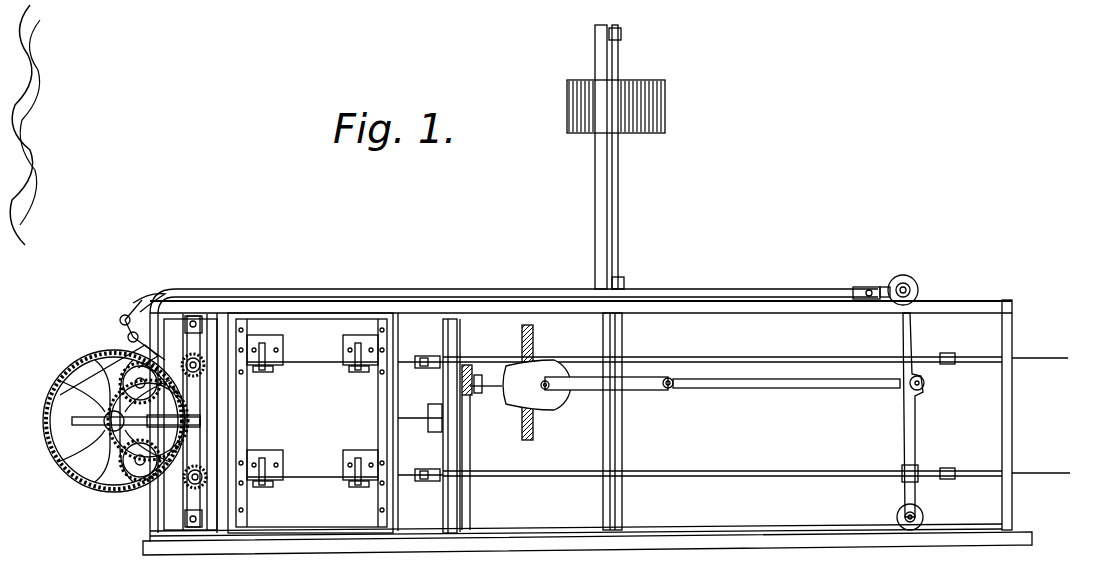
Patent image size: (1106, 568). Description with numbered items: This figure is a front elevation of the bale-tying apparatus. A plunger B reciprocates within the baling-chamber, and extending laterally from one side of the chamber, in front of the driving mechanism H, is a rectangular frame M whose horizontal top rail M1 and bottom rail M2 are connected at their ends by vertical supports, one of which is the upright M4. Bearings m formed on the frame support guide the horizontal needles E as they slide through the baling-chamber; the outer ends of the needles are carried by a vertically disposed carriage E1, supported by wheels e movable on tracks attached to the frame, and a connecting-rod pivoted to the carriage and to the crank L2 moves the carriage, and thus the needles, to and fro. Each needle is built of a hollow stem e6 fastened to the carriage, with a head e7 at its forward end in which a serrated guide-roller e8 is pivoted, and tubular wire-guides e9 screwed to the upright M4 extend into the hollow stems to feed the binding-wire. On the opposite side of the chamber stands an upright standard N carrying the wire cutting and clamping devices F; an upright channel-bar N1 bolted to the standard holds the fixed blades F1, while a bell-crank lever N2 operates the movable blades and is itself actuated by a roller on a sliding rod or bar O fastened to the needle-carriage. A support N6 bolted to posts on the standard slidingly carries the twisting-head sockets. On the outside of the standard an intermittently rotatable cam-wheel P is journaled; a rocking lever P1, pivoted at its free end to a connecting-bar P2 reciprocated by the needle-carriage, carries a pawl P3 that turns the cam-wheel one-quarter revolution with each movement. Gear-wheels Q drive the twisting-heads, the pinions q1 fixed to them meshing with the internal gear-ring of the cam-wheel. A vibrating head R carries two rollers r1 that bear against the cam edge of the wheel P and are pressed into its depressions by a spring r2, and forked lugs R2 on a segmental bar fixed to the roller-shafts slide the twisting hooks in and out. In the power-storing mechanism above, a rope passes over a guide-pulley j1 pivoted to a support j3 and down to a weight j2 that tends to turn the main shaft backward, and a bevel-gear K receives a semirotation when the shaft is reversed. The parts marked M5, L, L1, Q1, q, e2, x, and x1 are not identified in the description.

The rectangular frame M is at (587, 414).
The top rail M1 is at (771, 313).
The bottom rail M2 is at (692, 526).
The vertical support M4 is at (1013, 410).
The intermediate frame standard M5 is at (472, 500).
The connecting-bar P2 is at (527, 289).
The rocking lever P1 is at (121, 318).
The pawl P3 is at (128, 338).
The cam-wheel P is at (62, 498).
The upright standard N is at (168, 500).
The channel-bar N1 is at (104, 421).
The bell-crank lever N2 is at (136, 305).
The support N6 is at (188, 345).
The gear-wheel Q is at (122, 383).
The upper gear pin q is at (120, 392).
The lower gear Q1 is at (122, 456).
The pinion q1 is at (125, 462).
The head R is at (148, 420).
The forked lug R2 is at (180, 395).
The rollers r1 is at (165, 384).
The spring r2 is at (200, 420).
The plunger B is at (310, 423).
The fixed blade F1 is at (320, 528).
The wire cutting and clamping device F is at (712, 477).
The bearings m is at (459, 352).
The hollow stem e6 is at (660, 361).
The needle head e7 is at (420, 357).
The serrated guide-roller e8 is at (420, 368).
The tubular wire-guide e9 is at (955, 355).
The connecting rod e2 is at (770, 389).
The wheels e is at (922, 512).
The bevel-gear K is at (534, 342).
The cam L is at (562, 366).
The cam arm L1 is at (566, 395).
The crank L2 is at (667, 390).
The driving mechanism H is at (558, 410).
The needles E is at (698, 360).
The needle-carriage E1 is at (904, 414).
The sliding rod O is at (890, 283).
The rod end x is at (1040, 348).
The rod end x1 is at (1041, 462).
The guide-pulley j1 is at (620, 36).
The weight j2 is at (665, 114).
The support j3 is at (595, 206).